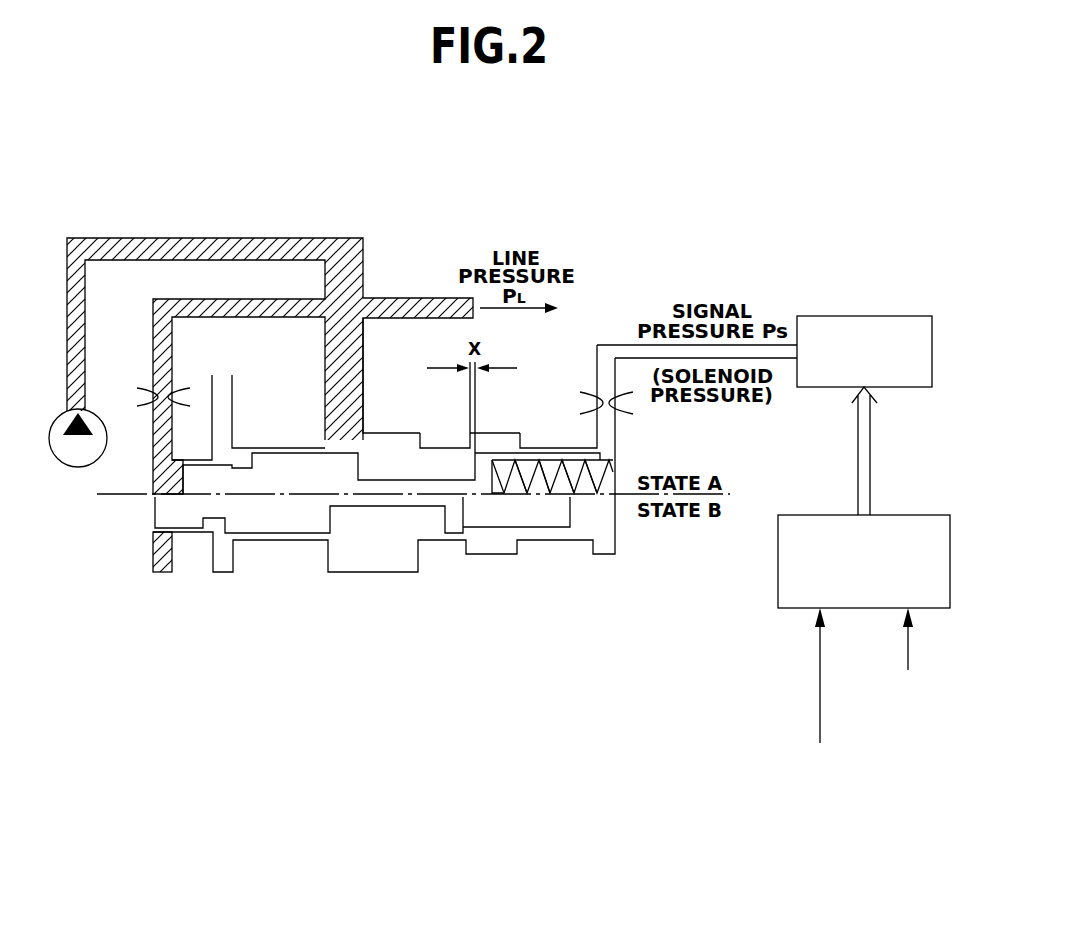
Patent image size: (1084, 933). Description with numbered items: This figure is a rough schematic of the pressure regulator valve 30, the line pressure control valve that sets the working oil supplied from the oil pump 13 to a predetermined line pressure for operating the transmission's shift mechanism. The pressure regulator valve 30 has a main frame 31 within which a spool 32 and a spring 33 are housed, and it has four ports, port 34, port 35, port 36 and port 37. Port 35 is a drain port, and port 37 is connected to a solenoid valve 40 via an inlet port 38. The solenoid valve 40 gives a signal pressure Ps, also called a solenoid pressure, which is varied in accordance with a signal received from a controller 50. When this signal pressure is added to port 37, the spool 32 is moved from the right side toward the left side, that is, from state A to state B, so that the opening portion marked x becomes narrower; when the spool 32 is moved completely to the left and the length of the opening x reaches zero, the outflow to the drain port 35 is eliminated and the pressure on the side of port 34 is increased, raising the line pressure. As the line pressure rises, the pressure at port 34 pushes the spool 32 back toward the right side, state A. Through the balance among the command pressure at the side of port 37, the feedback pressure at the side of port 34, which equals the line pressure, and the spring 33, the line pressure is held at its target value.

The oil pump 13 is at (78, 467).
The pressure regulator valve 30 is at (607, 297).
The main frame 31 is at (407, 430).
The spool 32 is at (292, 470).
The spring 33 is at (613, 470).
The port 34 is at (158, 476).
The drain port 35 is at (227, 425).
The port 36 is at (355, 412).
The port 37 is at (597, 435).
The inlet port 38 is at (607, 398).
The solenoid valve 40 is at (863, 316).
The controller 50 is at (910, 515).